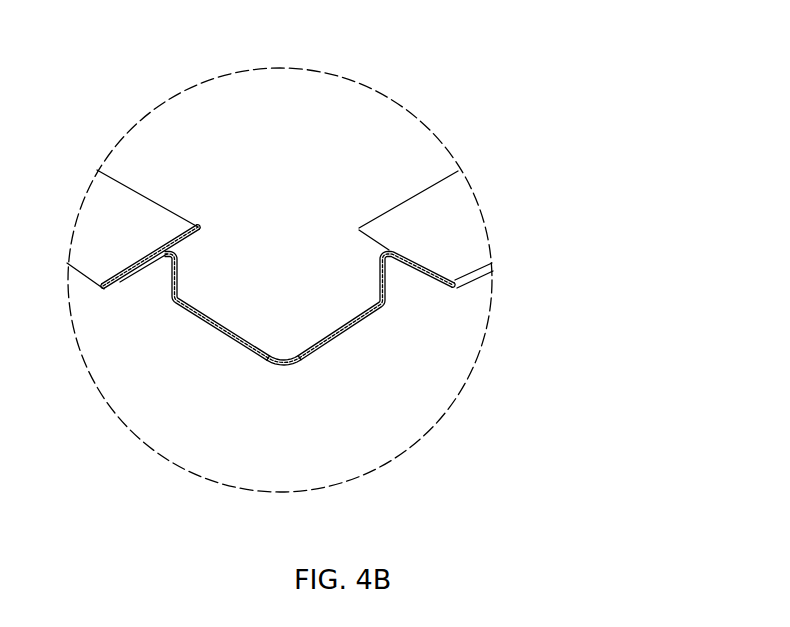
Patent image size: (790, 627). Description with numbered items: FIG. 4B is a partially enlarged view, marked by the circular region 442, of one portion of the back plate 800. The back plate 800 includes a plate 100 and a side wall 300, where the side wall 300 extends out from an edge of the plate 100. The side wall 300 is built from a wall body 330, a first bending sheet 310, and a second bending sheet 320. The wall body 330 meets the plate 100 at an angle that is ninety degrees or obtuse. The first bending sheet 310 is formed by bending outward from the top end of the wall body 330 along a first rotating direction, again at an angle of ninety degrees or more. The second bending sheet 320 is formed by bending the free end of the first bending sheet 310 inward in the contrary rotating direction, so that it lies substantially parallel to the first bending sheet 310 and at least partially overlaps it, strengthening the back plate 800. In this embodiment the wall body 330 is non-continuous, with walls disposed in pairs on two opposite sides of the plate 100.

The enlarged region 442 is at (373, 88).
The plate 100 is at (347, 292).
The side wall 300 is at (368, 295).
The first bending sheet 310 is at (437, 282).
The second bending sheet 320 is at (435, 272).
The wall body 330 is at (402, 280).
The back plate 800 is at (381, 287).